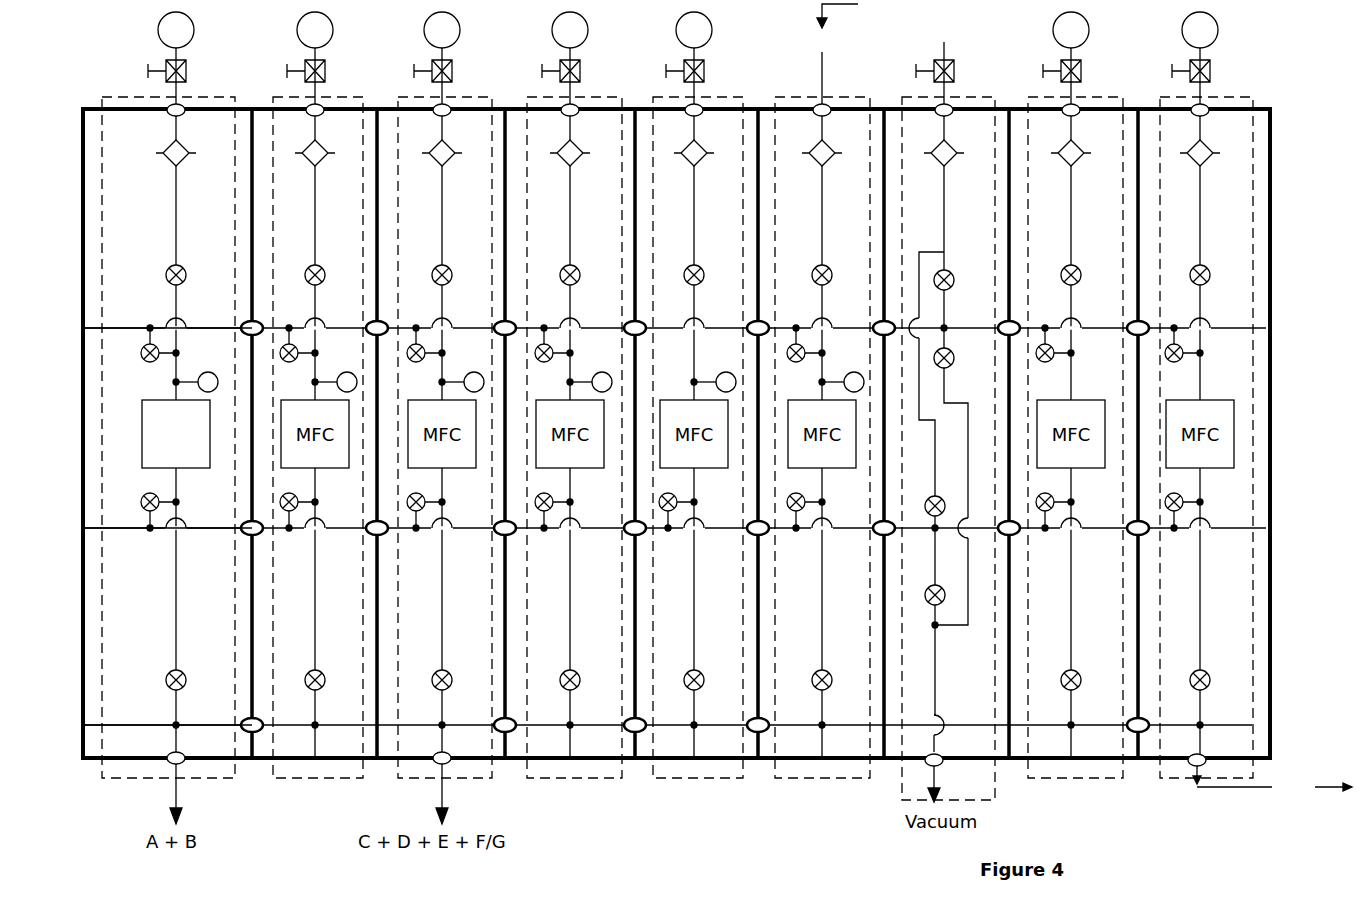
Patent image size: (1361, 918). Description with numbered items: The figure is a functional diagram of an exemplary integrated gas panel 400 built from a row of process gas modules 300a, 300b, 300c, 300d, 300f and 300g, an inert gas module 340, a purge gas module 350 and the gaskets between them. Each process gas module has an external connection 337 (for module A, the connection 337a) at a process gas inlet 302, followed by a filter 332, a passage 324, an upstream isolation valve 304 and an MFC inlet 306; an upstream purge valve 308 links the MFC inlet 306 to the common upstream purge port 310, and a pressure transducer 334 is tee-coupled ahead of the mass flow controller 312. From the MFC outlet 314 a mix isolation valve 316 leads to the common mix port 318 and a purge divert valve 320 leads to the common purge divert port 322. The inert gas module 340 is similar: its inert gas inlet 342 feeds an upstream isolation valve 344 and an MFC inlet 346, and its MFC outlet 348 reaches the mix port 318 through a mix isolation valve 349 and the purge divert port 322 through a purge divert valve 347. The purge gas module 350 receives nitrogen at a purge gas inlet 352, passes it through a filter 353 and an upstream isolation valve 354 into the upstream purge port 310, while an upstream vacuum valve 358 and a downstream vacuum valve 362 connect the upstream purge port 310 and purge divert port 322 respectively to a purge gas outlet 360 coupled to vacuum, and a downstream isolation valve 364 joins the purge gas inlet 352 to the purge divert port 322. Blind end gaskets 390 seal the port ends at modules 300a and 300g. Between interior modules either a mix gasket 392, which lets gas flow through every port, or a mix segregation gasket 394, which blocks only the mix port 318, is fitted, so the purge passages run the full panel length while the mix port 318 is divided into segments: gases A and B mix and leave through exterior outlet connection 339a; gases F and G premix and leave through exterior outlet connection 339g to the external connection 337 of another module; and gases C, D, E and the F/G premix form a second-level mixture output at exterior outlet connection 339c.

The integrated gas panel 400 is at (1293, 220).
The blind end gasket 390 is at (83, 744).
The mix gasket 392 is at (255, 733).
The mix segregation gasket 394 is at (378, 740).
The end process gas module 300a is at (217, 97).
The process gas module 300b is at (360, 97).
The process gas module 300c is at (487, 97).
The process gas module 300d is at (609, 97).
The premix process gas module 300f is at (1117, 97).
The end process gas module 300g is at (1257, 97).
The inert gas module 340 is at (740, 97).
The purge gas module 350 is at (983, 97).
The external connection 337a is at (168, 108).
The external connection 337 is at (814, 108).
The process gas inlet 302 is at (176, 215).
The filter 332 is at (163, 157).
The gas line 324 is at (144, 215).
The upstream isolation valve 304 is at (184, 278).
The MFC inlet 306 is at (172, 296).
The upstream purge port 310 is at (126, 326).
The upstream purge valve 308 is at (143, 362).
The pressure transducer 334 is at (206, 373).
The mass flow controller 312 is at (176, 434).
The MFC outlet 314 is at (174, 598).
The purge divert valve 320 is at (141, 498).
The purge divert port 322 is at (138, 532).
The mix isolation valve 316 is at (184, 687).
The mix port 318 is at (132, 724).
The exterior outlet connection 339a is at (180, 764).
The exterior outlet connection 339c is at (446, 764).
The exterior outlet connection 339g is at (1193, 764).
The inert gas inlet 342 is at (694, 205).
The upstream isolation valve 344 is at (702, 282).
The MFC inlet 346 is at (694, 340).
The purge divert valve 347 is at (664, 512).
The MFC outlet 348 is at (694, 568).
The mix isolation valve 349 is at (700, 688).
The purge gas inlet 352 is at (946, 122).
The filter 353 is at (948, 160).
The upstream isolation valve 354 is at (950, 287).
The upstream vacuum valve 358 is at (950, 364).
The purge gas outlet 360 is at (968, 412).
The downstream vacuum valve 362 is at (926, 588).
The downstream isolation valve 364 is at (927, 500).